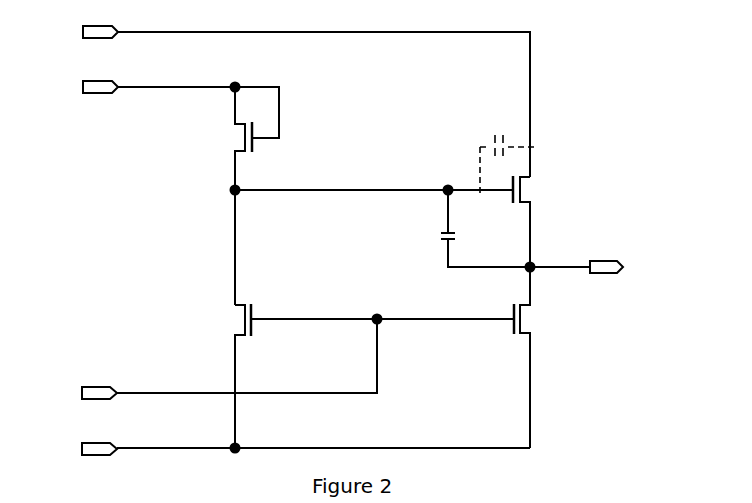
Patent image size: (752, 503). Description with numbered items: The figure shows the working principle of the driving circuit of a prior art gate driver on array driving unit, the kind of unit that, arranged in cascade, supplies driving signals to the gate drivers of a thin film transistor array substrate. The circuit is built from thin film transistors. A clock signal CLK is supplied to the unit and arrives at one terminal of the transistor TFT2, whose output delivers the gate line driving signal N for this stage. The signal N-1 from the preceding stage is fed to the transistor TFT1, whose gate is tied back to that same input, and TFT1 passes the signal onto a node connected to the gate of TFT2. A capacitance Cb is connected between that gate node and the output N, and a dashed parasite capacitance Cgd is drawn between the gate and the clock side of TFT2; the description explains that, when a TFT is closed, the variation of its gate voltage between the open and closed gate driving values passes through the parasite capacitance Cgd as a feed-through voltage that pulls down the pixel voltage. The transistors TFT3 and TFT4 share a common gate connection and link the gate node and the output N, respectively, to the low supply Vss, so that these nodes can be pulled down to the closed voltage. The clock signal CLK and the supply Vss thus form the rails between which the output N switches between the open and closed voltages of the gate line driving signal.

The clock signal CLK is at (291, 101).
The previous stage signal N-1 is at (167, 109).
The low voltage supply Vss is at (292, 449).
The output signal N is at (584, 267).
The thin film transistor TFT1 is at (222, 138).
The thin film transistor TFT2 is at (543, 221).
The thin film transistor TFT3 is at (355, 376).
The thin film transistor TFT4 is at (541, 357).
The parasite capacitance Cgd is at (507, 155).
The capacitance Cb is at (485, 228).